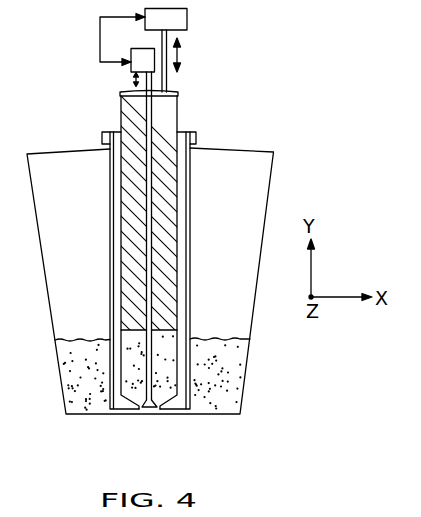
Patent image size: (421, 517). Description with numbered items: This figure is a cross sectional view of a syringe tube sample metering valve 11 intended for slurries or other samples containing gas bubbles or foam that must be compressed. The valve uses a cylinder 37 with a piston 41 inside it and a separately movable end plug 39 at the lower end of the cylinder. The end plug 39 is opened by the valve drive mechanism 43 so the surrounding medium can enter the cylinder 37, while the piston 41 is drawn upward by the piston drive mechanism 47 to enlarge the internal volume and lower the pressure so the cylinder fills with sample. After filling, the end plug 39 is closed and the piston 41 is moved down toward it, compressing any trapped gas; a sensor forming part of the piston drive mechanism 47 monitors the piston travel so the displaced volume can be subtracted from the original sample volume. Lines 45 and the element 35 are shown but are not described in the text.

The syringe tube sample metering valve 11 is at (213, 113).
The melt 35 is at (151, 340).
The cylinder 37 is at (185, 268).
The end plug 39 is at (153, 408).
The piston 41 is at (165, 197).
The valve drive mechanism 43 is at (131, 69).
The control lines 45 is at (100, 33).
The piston drive mechanism 47 is at (187, 17).